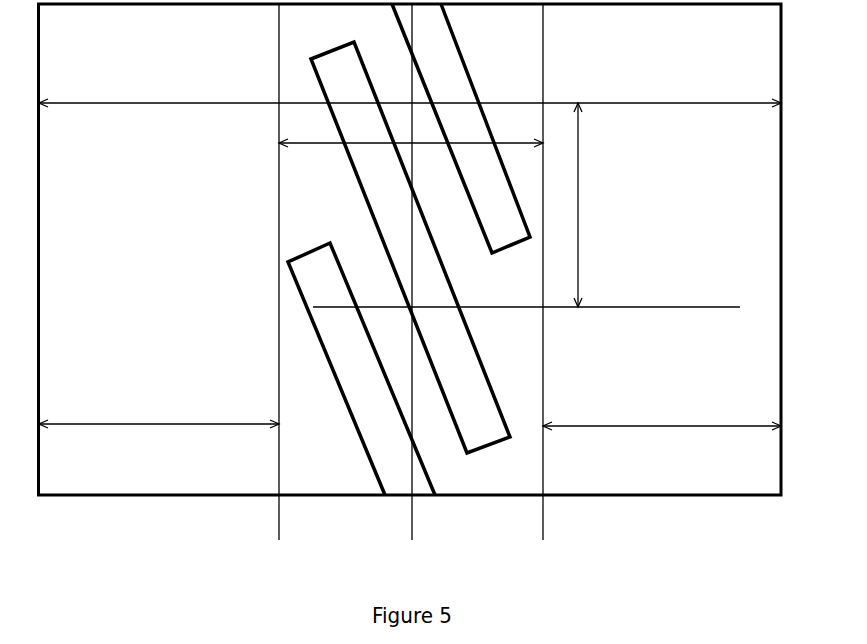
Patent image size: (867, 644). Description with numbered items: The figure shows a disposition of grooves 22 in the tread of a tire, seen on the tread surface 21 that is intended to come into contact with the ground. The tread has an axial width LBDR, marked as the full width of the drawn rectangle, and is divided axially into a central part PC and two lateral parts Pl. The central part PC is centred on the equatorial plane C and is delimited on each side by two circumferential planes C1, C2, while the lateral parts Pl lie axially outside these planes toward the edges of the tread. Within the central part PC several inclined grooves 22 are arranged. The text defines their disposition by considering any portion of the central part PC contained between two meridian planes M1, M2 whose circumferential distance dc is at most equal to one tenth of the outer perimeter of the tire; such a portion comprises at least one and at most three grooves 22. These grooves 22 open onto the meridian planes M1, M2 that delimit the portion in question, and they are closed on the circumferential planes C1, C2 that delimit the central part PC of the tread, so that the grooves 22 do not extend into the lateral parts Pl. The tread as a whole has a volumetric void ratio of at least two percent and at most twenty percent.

The tread surface 21 is at (410, 249).
The grooves 22 is at (509, 217).
The equatorial plane C is at (426, 275).
The circumferential plane C1 is at (565, 275).
The circumferential plane C2 is at (298, 275).
The axial width LBDR is at (410, 84).
The central part PC is at (411, 161).
The circumferential distance dc is at (640, 205).
The meridian plane M1 is at (608, 81).
The meridian plane M2 is at (526, 290).
The lateral parts Pl is at (410, 442).